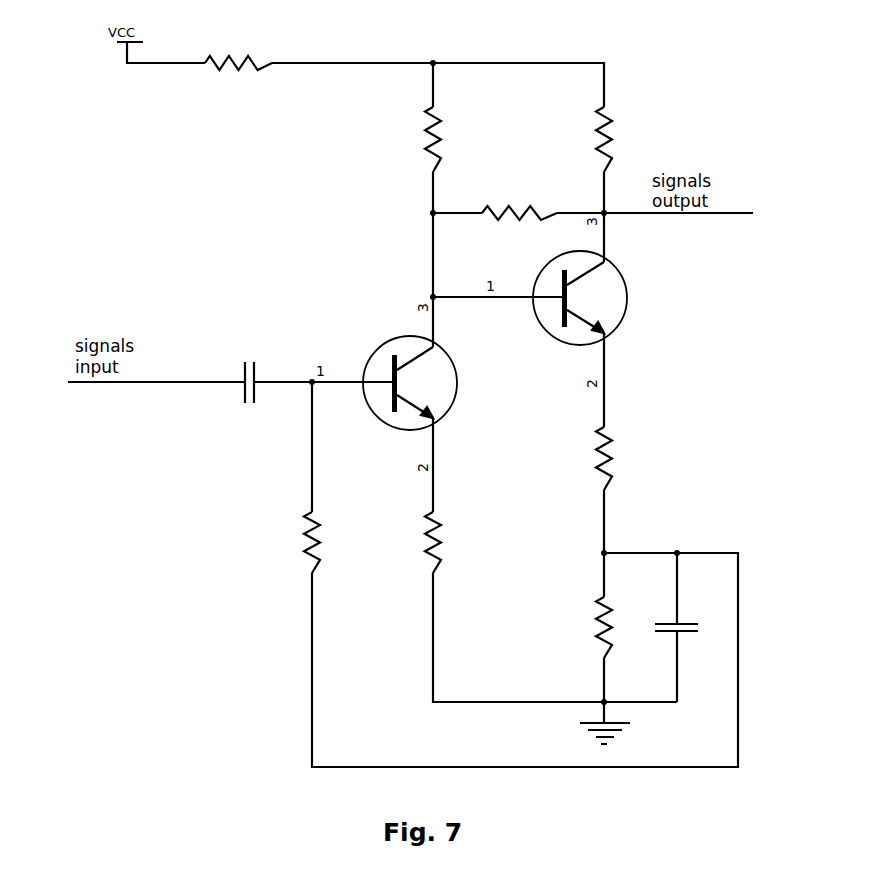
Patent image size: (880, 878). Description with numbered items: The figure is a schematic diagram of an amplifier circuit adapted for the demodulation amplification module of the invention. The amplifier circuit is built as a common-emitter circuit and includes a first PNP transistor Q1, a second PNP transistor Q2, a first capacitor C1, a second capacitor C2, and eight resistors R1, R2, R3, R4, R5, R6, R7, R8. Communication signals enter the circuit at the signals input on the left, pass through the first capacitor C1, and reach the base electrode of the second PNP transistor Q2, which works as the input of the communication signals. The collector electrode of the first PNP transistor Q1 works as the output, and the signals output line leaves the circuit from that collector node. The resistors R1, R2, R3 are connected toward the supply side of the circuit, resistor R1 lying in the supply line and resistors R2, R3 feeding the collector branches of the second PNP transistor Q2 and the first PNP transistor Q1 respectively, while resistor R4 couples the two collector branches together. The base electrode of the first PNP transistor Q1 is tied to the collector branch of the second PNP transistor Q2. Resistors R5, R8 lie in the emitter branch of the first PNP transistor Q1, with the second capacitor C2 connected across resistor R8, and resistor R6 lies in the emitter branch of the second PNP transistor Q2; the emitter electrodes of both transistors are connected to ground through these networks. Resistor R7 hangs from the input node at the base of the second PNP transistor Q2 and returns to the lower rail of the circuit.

The resistor R1 is at (236, 54).
The resistor R2 is at (442, 139).
The resistor R3 is at (613, 139).
The resistor R4 is at (519, 204).
The resistor R5 is at (613, 458).
The resistor R6 is at (442, 542).
The resistor R7 is at (321, 542).
The resistor R8 is at (613, 627).
The first capacitor C1 is at (246, 373).
The second capacitor C2 is at (689, 628).
The first PNP transistor Q1 is at (597, 298).
The second PNP transistor Q2 is at (427, 383).